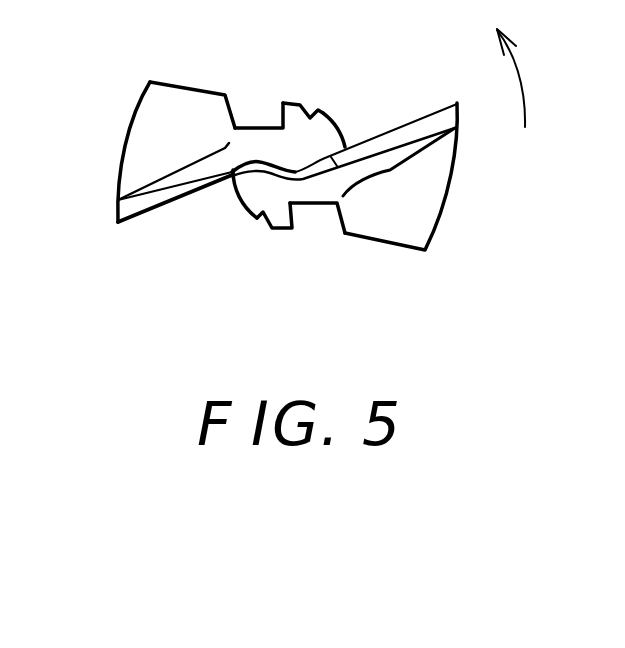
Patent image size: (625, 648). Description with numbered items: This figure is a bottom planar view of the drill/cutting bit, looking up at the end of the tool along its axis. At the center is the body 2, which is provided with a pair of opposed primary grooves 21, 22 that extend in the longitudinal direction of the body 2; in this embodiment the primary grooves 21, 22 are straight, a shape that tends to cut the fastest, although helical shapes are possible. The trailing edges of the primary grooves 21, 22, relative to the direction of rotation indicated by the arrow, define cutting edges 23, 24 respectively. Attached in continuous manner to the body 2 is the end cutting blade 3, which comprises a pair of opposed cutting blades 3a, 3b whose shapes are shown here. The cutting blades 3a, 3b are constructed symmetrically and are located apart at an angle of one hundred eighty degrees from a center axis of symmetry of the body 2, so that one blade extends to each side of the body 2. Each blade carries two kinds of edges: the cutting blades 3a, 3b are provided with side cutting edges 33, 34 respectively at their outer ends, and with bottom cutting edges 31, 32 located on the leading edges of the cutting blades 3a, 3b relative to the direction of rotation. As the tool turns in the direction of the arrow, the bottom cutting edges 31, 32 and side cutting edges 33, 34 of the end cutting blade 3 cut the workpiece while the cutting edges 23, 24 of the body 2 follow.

The body 2 is at (297, 156).
The primary groove 21 is at (251, 117).
The primary groove 22 is at (316, 214).
The cutting edge 23 is at (282, 115).
The cutting edge 24 is at (295, 230).
The end cutting blade 3 is at (281, 163).
The cutting blade 3a is at (163, 121).
The cutting blade 3b is at (427, 231).
The bottom cutting edge 31 is at (152, 219).
The bottom cutting edge 32 is at (404, 128).
The side cutting edge 33 is at (117, 227).
The side cutting edge 34 is at (457, 100).